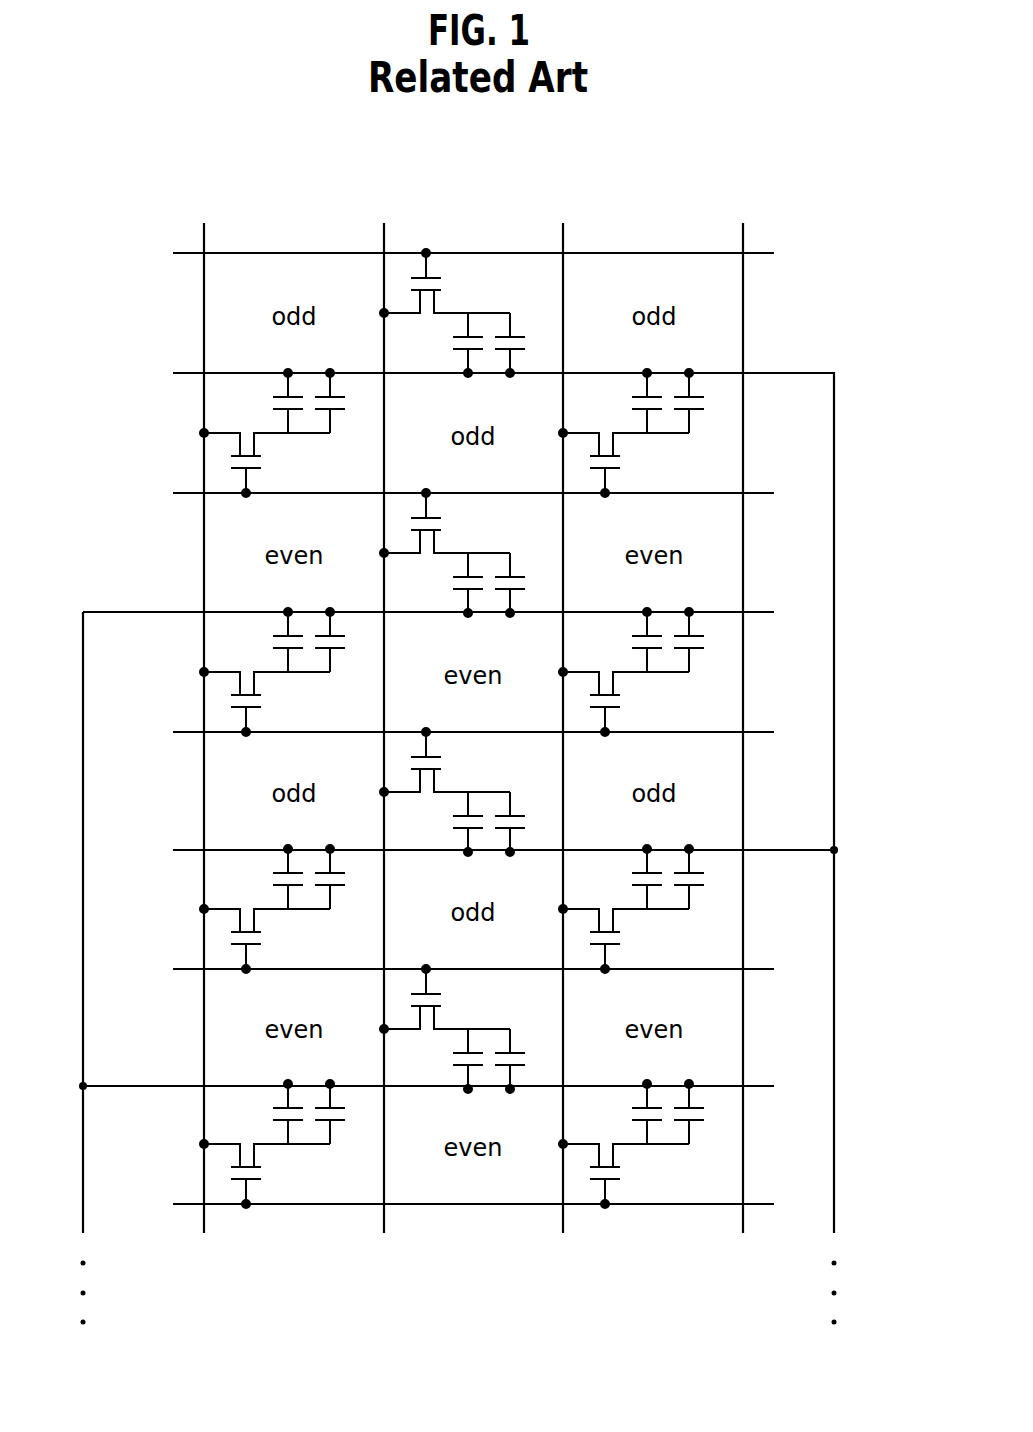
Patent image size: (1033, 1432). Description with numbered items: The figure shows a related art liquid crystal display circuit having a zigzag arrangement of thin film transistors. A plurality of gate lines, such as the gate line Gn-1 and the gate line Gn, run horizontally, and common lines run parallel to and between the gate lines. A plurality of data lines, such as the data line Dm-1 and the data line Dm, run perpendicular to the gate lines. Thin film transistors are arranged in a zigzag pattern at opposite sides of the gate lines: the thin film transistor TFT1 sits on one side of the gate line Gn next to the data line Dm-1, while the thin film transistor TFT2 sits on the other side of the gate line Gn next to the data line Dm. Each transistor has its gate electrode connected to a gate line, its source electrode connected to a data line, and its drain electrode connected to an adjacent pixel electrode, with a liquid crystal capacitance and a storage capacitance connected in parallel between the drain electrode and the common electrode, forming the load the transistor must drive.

The thin film transistor TFT1 is at (282, 460).
The thin film transistor TFT2 is at (462, 518).
The data line Dm-1 is at (214, 710).
The data line Dm is at (384, 710).
The gate line Gn-1 is at (442, 256).
The gate line Gn is at (451, 492).